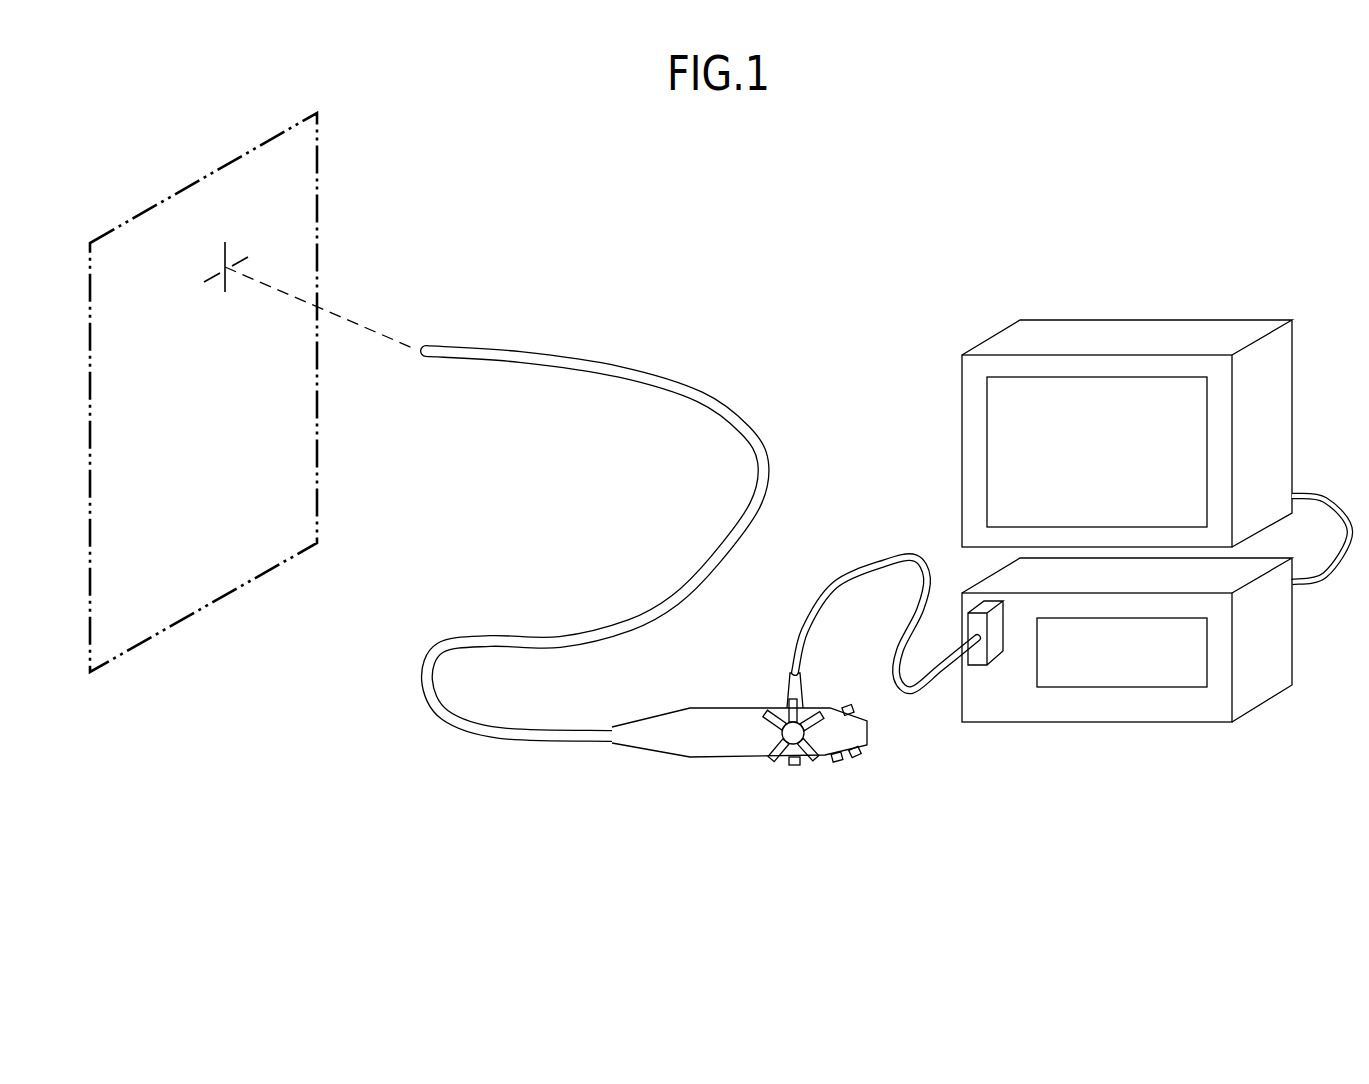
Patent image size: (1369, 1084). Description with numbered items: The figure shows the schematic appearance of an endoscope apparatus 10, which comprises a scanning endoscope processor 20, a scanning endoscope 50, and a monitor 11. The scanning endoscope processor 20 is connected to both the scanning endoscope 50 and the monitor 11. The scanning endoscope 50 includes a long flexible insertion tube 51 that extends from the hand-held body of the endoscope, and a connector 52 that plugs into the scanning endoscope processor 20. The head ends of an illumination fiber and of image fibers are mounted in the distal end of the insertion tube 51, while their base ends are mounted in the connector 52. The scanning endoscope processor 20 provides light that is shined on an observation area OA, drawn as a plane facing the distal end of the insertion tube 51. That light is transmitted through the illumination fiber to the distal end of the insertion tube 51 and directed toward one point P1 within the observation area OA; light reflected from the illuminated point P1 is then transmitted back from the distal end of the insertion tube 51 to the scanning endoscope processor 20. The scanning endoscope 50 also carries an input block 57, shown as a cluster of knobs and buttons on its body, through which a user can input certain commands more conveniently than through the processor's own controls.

The endoscope apparatus 10 is at (900, 829).
The monitor 11 is at (1152, 320).
The scanning endoscope processor 20 is at (1102, 724).
The scanning endoscope 50 is at (739, 755).
The insertion tube 51 is at (622, 366).
The connector 52 is at (975, 668).
The input block 57 is at (867, 757).
The observation area OA is at (195, 612).
The point P1 is at (226, 268).